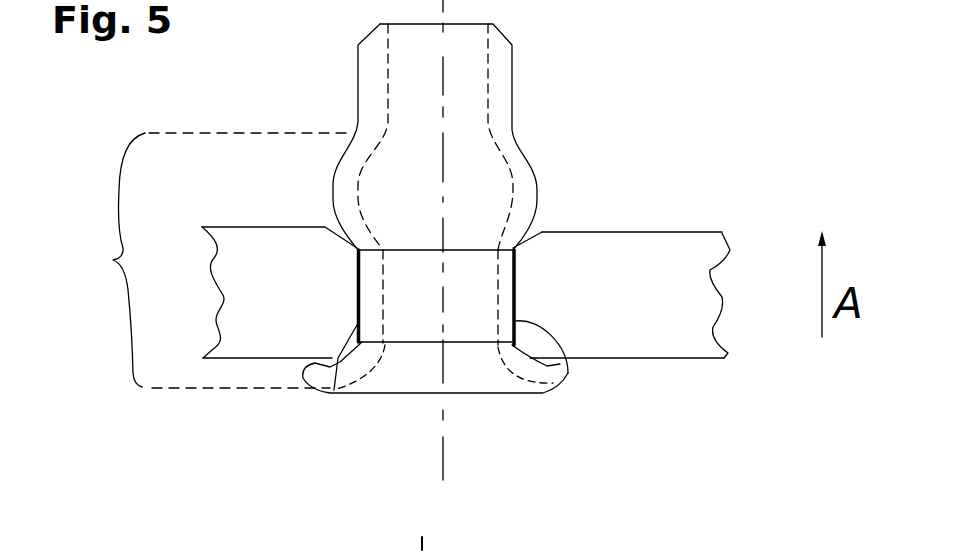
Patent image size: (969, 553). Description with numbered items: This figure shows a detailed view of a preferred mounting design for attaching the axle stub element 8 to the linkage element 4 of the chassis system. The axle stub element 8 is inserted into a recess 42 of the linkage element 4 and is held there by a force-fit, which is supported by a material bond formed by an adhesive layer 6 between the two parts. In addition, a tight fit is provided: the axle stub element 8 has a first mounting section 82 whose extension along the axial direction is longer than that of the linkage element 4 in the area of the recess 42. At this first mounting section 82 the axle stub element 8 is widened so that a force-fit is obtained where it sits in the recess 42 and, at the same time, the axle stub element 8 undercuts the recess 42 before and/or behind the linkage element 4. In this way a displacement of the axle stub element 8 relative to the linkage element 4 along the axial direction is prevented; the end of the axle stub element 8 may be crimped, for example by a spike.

The axle stub element 8 is at (523, 178).
The adhesive layer 6 is at (358, 323).
The recess 42 is at (568, 373).
The linkage element 4 is at (643, 338).
The first mounting section 82 is at (198, 260).